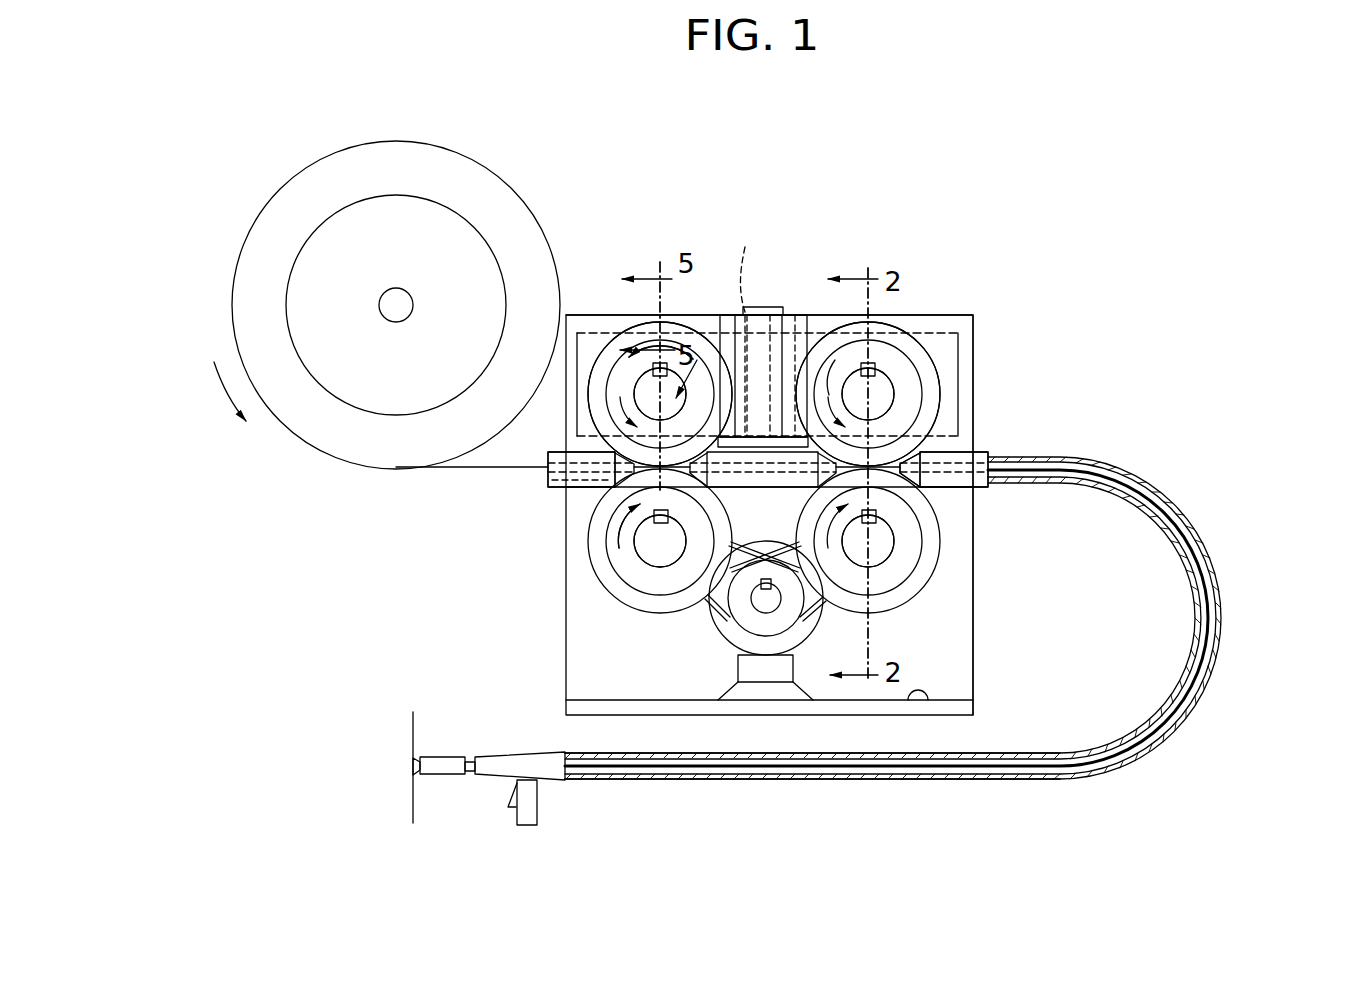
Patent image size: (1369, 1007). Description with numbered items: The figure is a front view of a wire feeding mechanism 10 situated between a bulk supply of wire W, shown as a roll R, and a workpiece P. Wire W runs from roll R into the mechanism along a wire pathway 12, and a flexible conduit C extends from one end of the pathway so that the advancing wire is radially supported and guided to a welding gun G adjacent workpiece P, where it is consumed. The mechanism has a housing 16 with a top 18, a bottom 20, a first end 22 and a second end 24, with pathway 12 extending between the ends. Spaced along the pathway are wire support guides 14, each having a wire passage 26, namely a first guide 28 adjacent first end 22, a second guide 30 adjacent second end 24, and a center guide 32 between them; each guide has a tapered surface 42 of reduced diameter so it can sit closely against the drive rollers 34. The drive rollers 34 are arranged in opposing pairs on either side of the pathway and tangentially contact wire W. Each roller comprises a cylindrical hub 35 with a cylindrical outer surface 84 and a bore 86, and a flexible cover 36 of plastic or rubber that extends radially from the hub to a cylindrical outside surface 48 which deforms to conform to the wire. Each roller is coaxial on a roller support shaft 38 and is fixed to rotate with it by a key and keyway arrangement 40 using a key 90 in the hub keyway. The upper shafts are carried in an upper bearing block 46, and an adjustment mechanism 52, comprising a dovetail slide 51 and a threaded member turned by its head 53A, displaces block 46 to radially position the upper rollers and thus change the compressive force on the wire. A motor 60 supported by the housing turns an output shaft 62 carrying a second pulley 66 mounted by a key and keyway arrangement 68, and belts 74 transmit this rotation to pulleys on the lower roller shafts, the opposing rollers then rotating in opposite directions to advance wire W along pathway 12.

The wire feeding mechanism 10 is at (1160, 290).
The wire pathway 12 is at (578, 490).
The wire support guides 14 is at (793, 312).
The housing 16 is at (603, 313).
The top 18 is at (930, 320).
The bottom 20 is at (928, 700).
The first end 22 is at (566, 605).
The second end 24 is at (950, 595).
The wire passage 26 is at (555, 485).
The first guide 28 is at (550, 478).
The second guide 30 is at (990, 452).
The center guide 32 is at (975, 380).
The drive rollers 34 is at (695, 318).
The cylindrical hub 35 is at (835, 330).
The flexible cover 36 is at (822, 340).
The roller support shaft 38 is at (722, 314).
The key and keyway arrangement 40 is at (640, 368).
The tapered surface 42 is at (566, 448).
The upper bearing block 46 is at (578, 313).
The cylindrical outside surface 48 is at (620, 314).
The dovetail slide 51 is at (747, 327).
The adjustment mechanism 52 is at (775, 372).
The head 53A is at (748, 307).
The motor 60 is at (717, 643).
The output shaft 62 is at (768, 615).
The second pulley 66 is at (780, 635).
The key and keyway arrangement 68 is at (756, 607).
The belts 74 is at (725, 615).
The cylindrical outer surface 84 is at (590, 312).
The bore 86 is at (665, 600).
The key 90 is at (640, 538).
The roll R is at (316, 272).
The wire W is at (440, 469).
The flexible conduit C is at (1222, 535).
The welding gun G is at (500, 770).
The workpiece P is at (408, 790).